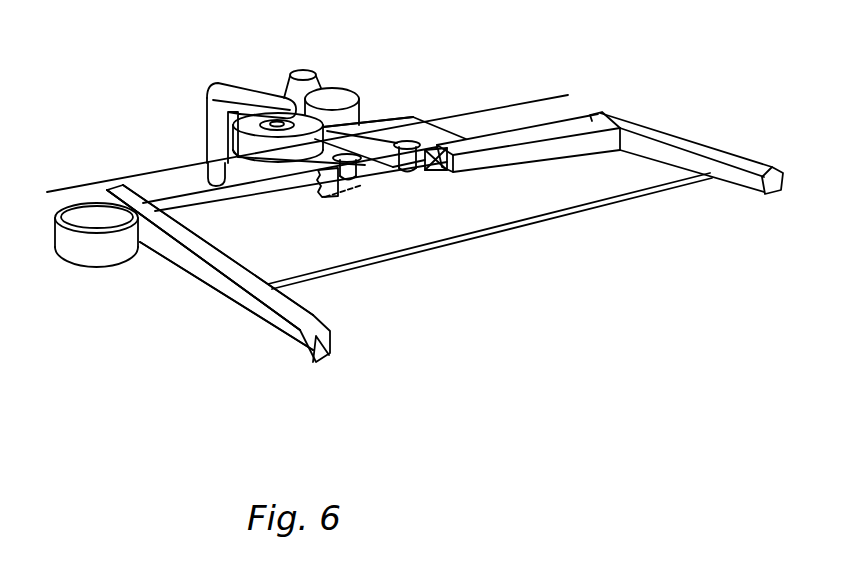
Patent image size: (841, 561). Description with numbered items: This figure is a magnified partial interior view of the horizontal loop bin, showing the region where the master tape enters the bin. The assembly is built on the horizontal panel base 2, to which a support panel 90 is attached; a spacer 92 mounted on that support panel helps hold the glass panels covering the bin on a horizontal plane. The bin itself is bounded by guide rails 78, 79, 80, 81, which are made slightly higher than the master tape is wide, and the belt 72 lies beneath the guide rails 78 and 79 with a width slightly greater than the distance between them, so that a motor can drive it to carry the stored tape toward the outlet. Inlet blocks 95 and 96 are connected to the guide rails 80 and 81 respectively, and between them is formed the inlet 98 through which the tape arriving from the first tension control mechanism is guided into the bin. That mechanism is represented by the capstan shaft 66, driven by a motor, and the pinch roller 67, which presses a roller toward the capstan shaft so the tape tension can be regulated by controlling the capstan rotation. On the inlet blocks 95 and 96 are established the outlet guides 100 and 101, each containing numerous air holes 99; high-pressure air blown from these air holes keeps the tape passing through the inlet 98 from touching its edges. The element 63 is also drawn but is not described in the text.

The horizontal panel base 2 is at (82, 192).
The knob 63 is at (323, 77).
The capstan shaft 66 is at (342, 100).
The pinch roller 67 is at (240, 85).
The belt 72 is at (328, 308).
The guide rail 78 is at (670, 150).
The guide rail 79 is at (263, 315).
The guide rail 80 is at (547, 130).
The guide rail 81 is at (188, 213).
The support panel 90 is at (245, 255).
The spacer 92 is at (103, 222).
The inlet block 95 is at (418, 122).
The inlet block 96 is at (287, 163).
The inlet 98 is at (373, 140).
The air holes 99 is at (352, 178).
The outlet guide 100 is at (437, 170).
The outlet guide 101 is at (347, 178).